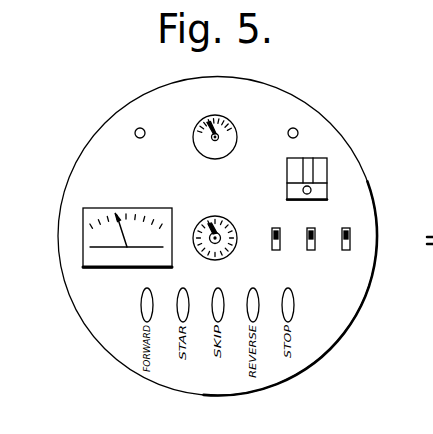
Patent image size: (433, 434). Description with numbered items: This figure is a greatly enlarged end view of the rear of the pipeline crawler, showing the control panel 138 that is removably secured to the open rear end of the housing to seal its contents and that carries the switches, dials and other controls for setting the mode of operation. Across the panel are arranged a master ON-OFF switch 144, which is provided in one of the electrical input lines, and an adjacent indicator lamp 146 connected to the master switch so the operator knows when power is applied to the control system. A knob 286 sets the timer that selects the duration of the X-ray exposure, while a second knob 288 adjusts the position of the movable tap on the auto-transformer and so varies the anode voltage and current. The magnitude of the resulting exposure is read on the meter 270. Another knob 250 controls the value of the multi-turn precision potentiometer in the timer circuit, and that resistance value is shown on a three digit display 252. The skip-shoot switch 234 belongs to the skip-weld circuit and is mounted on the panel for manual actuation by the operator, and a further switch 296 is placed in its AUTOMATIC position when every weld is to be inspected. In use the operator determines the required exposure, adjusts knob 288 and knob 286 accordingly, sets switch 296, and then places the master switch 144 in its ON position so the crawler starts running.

The control panel 138 is at (93, 312).
The indicator lamp 146 is at (297, 130).
The knob 286 is at (248, 104).
The knob 288 is at (210, 217).
The meter 270 is at (90, 237).
The three digit display 252 is at (317, 172).
The knob 250 is at (312, 190).
The switch 296 is at (271, 238).
The skip-shoot switch 234 is at (305, 239).
The master ON-OFF switch 144 is at (350, 240).